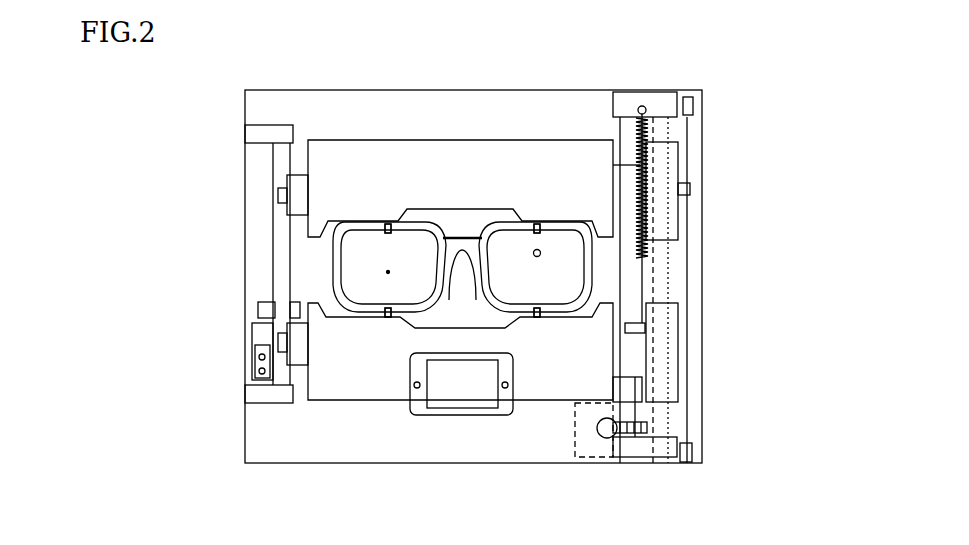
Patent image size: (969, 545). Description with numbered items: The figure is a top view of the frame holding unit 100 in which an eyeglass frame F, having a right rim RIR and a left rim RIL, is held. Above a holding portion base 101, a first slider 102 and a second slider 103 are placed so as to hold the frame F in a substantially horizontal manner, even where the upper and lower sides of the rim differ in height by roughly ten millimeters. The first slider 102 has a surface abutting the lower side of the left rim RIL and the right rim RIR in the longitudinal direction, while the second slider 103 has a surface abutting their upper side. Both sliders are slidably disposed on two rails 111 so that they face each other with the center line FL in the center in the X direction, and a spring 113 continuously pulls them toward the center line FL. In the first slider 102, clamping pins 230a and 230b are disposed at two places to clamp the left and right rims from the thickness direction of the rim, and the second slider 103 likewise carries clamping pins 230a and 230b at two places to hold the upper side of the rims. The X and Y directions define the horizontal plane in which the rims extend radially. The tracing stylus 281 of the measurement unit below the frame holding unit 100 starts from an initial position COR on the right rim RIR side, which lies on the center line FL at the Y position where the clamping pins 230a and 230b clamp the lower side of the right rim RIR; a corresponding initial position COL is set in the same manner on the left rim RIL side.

The frame holding unit 100 is at (737, 164).
The holding portion base 101 is at (298, 112).
The first slider 102 is at (313, 397).
The second slider 103 is at (347, 177).
The rails 111 is at (273, 188).
The spring 113 is at (650, 227).
The tracing stylus 281 is at (540, 251).
The clamping pin 230a is at (388, 228).
The clamping pin 230b is at (462, 270).
The eyeglass frame F is at (467, 222).
The center line FL is at (333, 280).
The left rim RIL is at (343, 283).
The right rim RIR is at (595, 270).
The initial position at left rim side COL is at (388, 272).
The initial position at right rim side COR is at (540, 255).
The X direction X is at (90, 462).
The Y direction Y is at (90, 462).